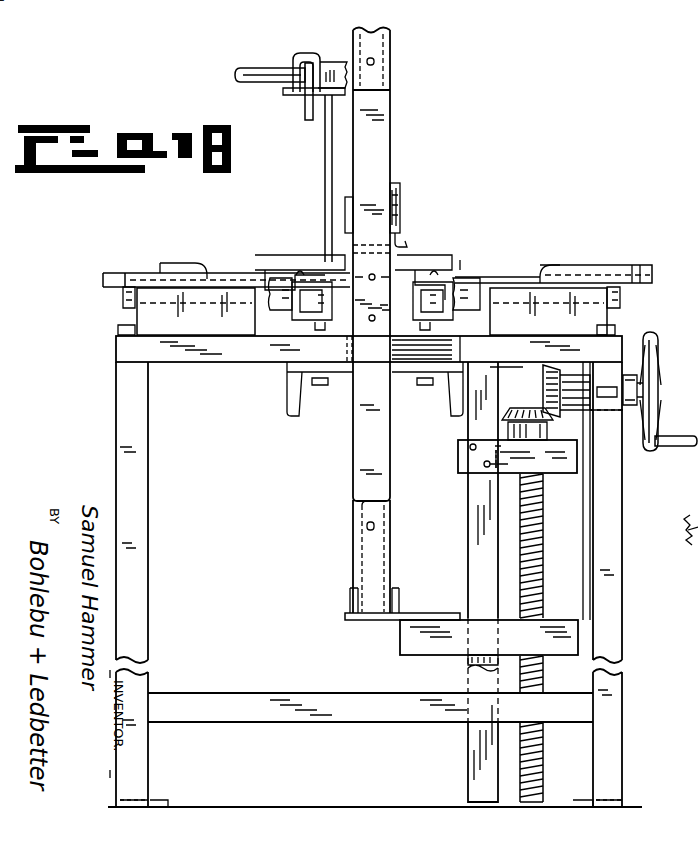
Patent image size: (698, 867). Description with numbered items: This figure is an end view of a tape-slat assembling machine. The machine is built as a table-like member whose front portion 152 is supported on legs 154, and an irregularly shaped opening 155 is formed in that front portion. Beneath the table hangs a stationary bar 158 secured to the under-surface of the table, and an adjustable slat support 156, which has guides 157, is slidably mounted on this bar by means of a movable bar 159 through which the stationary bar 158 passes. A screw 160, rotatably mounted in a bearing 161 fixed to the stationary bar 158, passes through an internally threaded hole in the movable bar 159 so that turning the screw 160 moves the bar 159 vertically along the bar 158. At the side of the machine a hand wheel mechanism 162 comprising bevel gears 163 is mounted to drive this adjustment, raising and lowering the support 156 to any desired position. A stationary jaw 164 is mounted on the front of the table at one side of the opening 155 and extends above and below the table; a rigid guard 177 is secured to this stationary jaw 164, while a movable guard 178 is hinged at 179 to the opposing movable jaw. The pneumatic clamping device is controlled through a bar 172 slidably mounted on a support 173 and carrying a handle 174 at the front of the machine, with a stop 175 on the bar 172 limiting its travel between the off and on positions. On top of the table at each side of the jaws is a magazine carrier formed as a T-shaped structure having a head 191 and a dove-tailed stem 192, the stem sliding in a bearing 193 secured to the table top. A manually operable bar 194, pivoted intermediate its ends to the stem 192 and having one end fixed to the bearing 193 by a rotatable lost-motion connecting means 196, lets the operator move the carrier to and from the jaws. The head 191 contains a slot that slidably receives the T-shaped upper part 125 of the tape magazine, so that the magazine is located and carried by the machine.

The upper part of the magazine body 125 is at (283, 288).
The front portion of the table 152 is at (190, 350).
The legs 154 is at (140, 431).
The opening 155 is at (448, 356).
The adjustable slat support 156 is at (374, 620).
The guides 157 is at (349, 596).
The stationary bar 158 is at (475, 538).
The movable bar 159 is at (436, 647).
The screw 160 is at (540, 560).
The bearing 161 is at (562, 472).
The hand wheel mechanism 162 is at (655, 343).
The bevel gears 163 is at (545, 385).
The stationary jaw 164 is at (387, 161).
The bar 172 is at (342, 45).
The support 173 is at (325, 173).
The handle 174 is at (262, 78).
The stop 175 is at (304, 110).
The rigid guard 177 is at (345, 208).
The movable guard 178 is at (398, 189).
The hinge 179 is at (405, 241).
The head 191 is at (298, 307).
The stem 192 is at (123, 299).
The bearing 193 is at (140, 318).
The manually operable bar 194 is at (112, 272).
The lost-motion connecting means 196 is at (196, 265).